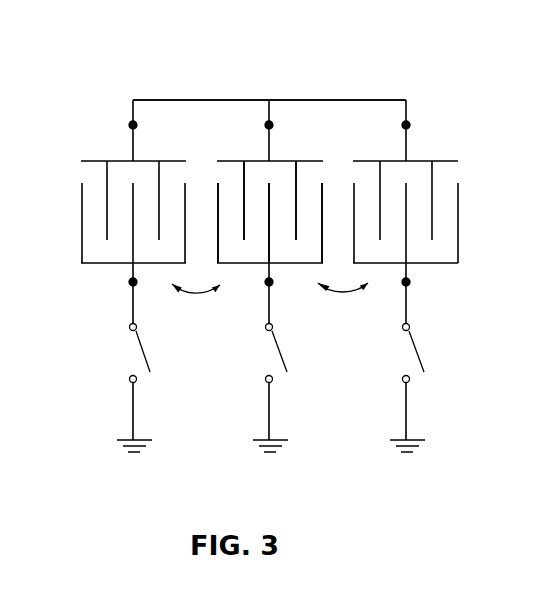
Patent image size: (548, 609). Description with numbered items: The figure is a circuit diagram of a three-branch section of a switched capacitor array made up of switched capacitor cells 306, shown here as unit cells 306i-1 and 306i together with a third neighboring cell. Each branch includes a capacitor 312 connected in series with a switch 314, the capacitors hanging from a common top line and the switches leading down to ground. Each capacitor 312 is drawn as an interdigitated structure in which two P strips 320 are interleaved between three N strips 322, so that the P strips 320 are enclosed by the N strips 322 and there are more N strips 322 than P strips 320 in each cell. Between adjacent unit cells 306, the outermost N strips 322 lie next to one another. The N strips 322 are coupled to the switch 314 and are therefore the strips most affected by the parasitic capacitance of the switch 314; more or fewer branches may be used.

The switched capacitor cell 306 is at (440, 82).
The unit cell i-1 306i-1 is at (133, 293).
The unit cell i 306i is at (223, 160).
The capacitor 312 is at (98, 160).
The switch 314 is at (132, 349).
The P strip 320 is at (244, 187).
The N strip 322 is at (298, 220).